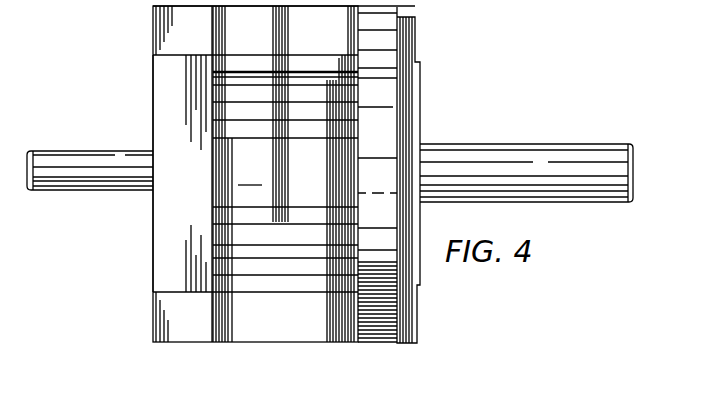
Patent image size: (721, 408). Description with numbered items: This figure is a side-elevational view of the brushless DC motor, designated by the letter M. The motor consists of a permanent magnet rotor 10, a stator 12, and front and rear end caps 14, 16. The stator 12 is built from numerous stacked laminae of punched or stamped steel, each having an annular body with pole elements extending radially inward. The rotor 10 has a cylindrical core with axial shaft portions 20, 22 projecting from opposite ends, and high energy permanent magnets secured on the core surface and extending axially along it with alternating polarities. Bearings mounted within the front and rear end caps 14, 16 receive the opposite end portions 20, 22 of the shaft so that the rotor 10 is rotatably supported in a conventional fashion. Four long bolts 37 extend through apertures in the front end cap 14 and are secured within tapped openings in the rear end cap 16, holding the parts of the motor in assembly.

The permanent magnet rotor 10 is at (330, 192).
The stator 12 is at (258, 343).
The front end cap 14 is at (423, 96).
The rear end cap 16 is at (153, 238).
The axial shaft portion 20 is at (587, 155).
The axial shaft portion 22 is at (92, 151).
The long bolts 37 is at (382, 320).